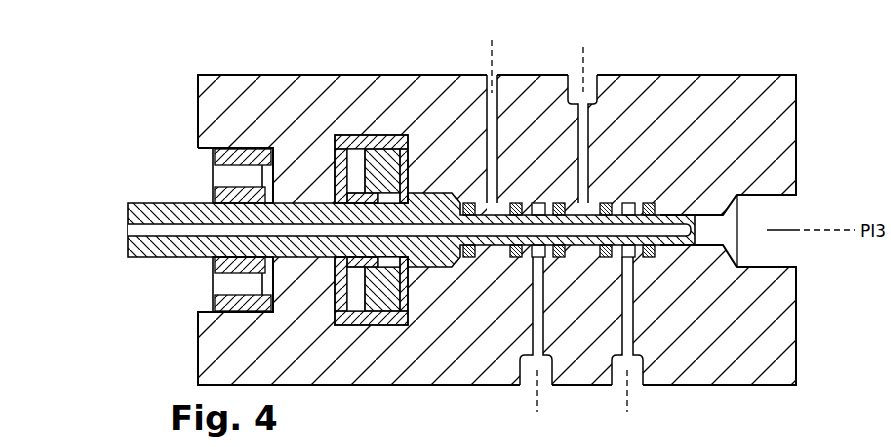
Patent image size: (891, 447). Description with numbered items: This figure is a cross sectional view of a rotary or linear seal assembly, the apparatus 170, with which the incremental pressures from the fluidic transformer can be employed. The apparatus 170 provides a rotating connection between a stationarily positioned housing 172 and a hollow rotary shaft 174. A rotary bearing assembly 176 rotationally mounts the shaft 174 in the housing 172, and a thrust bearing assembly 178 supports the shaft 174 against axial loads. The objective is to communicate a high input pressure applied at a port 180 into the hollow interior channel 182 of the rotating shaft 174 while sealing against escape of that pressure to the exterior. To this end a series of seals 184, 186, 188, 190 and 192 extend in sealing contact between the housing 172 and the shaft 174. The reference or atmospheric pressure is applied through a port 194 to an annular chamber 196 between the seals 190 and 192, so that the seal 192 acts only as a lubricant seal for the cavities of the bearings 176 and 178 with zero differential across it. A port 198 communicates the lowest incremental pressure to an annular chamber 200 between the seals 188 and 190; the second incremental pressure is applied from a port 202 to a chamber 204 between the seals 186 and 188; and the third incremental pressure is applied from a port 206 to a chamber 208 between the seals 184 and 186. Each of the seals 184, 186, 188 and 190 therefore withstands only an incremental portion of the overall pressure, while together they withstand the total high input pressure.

The apparatus 170 is at (732, 63).
The housing 172 is at (797, 90).
The hollow rotary shaft 174 is at (136, 208).
The rotary bearing assembly 176 is at (222, 172).
The thrust bearing assembly 178 is at (357, 137).
The port 180 is at (791, 257).
The hollow interior channel 182 is at (136, 231).
The seal 184 is at (649, 203).
The seal 186 is at (605, 257).
The seal 188 is at (562, 204).
The seal 190 is at (519, 258).
The seal 192 is at (470, 201).
The port 194 is at (489, 88).
The annular chamber 196 is at (508, 202).
The port 198 is at (528, 370).
The annular chamber 200 is at (534, 258).
The port 202 is at (598, 83).
The chamber 204 is at (603, 202).
The port 206 is at (634, 372).
The chamber 208 is at (628, 257).